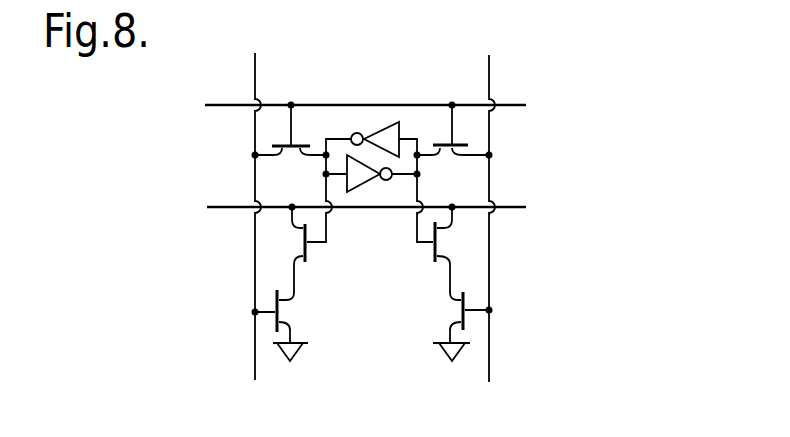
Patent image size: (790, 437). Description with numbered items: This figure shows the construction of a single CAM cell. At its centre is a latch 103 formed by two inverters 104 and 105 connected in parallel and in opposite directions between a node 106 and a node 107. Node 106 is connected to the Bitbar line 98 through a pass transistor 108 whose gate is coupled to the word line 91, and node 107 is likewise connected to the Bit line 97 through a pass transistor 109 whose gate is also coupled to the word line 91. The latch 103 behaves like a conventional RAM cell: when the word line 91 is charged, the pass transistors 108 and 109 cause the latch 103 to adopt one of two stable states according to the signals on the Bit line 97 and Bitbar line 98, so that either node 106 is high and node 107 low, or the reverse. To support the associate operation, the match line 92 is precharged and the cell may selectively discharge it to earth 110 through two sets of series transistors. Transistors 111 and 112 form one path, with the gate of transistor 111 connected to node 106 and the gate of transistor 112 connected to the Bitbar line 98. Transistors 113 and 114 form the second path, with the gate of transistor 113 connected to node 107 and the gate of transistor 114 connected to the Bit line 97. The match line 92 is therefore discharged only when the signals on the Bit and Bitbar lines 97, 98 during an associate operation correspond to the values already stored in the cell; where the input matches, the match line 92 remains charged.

The word line 91 is at (320, 103).
The match line 92 is at (504, 210).
The Bit line 97 is at (255, 185).
The Bitbar line 98 is at (491, 368).
The latch 103 is at (377, 90).
The inverter 104 is at (401, 124).
The inverter 105 is at (368, 197).
The node 106 is at (418, 157).
The node 107 is at (326, 157).
The pass transistor 108 is at (462, 147).
The pass transistor 109 is at (288, 145).
The earth 110 is at (298, 353).
The transistor 111 is at (440, 248).
The transistor 112 is at (468, 305).
The transistor 113 is at (303, 249).
The transistor 114 is at (277, 300).